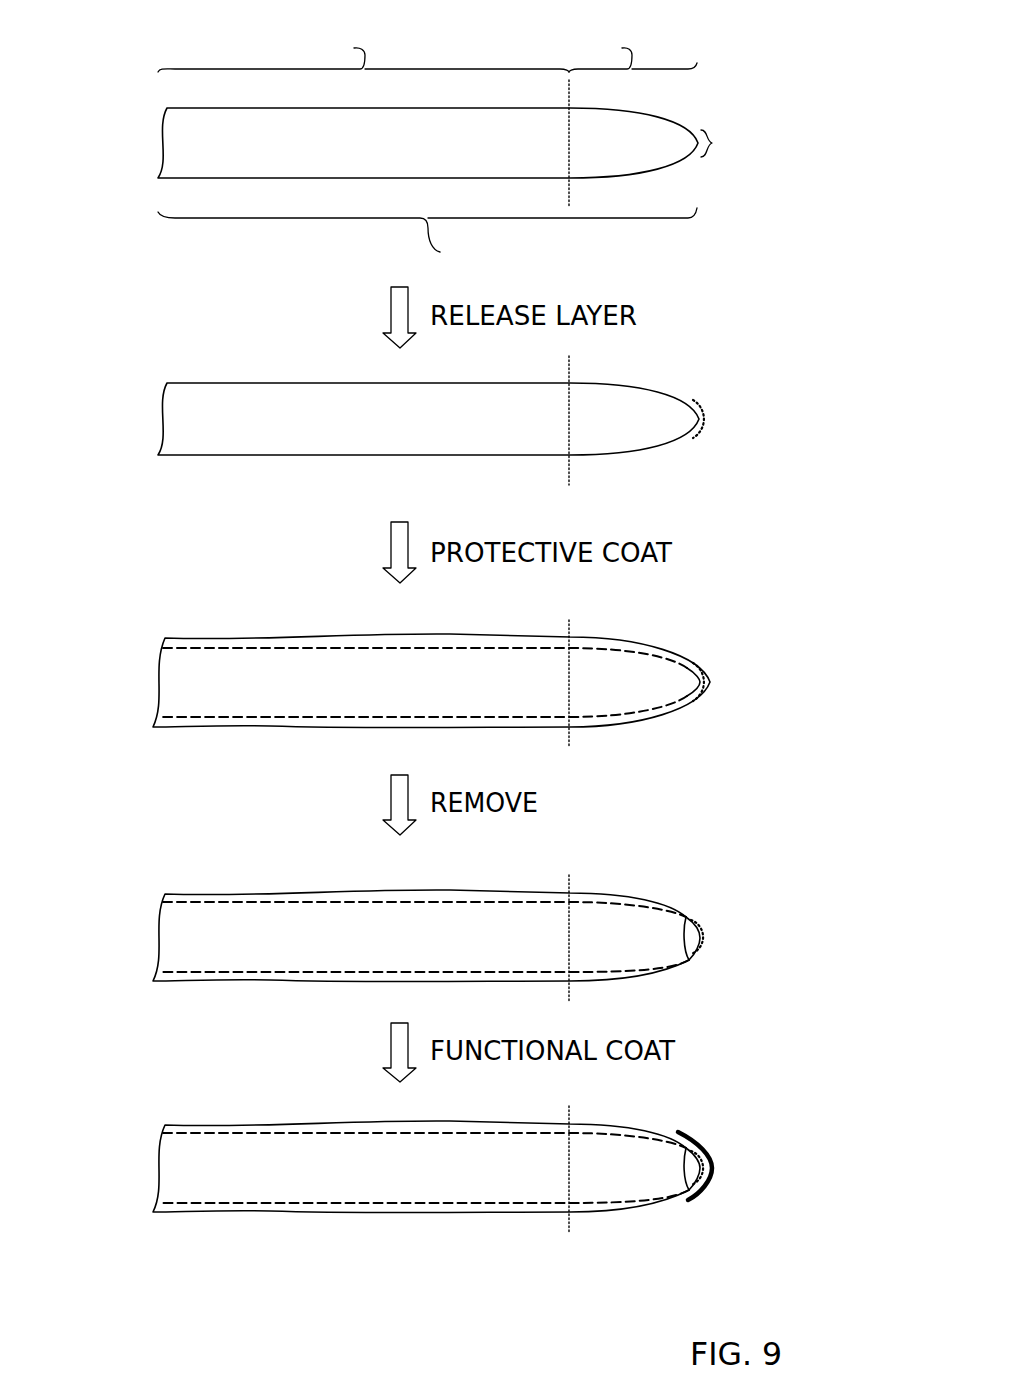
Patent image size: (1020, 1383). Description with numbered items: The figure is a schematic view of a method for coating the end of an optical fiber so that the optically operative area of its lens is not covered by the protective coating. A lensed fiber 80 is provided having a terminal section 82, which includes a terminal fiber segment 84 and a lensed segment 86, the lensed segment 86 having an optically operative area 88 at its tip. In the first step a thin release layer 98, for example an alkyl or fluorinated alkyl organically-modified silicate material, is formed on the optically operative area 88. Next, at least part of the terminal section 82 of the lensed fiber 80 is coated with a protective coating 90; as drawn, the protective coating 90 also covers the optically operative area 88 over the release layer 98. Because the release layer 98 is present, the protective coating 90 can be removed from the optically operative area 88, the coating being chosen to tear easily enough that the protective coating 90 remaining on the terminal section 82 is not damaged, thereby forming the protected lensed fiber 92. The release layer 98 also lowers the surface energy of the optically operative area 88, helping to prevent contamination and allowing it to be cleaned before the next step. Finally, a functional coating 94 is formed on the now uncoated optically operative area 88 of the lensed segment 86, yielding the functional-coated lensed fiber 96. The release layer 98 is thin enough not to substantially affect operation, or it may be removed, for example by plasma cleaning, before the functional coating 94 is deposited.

The lensed fiber 80 is at (114, 96).
The terminal section 82 is at (427, 243).
The terminal fiber segment 84 is at (363, 50).
The lensed segment 86 is at (633, 50).
The optically operative area 88 is at (712, 143).
The protective coating 90 is at (667, 652).
The protected lensed fiber 92 is at (115, 909).
The functional coating 94 is at (712, 1163).
The functional-coated lensed fiber 96 is at (115, 1142).
The release layer 98 is at (700, 432).